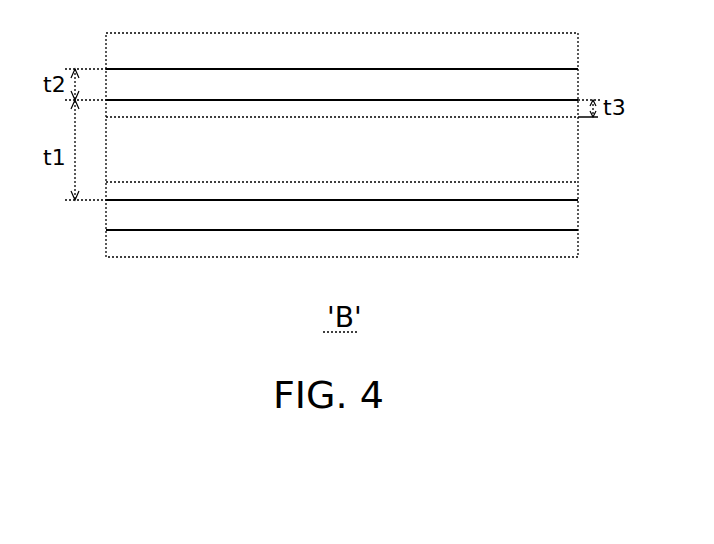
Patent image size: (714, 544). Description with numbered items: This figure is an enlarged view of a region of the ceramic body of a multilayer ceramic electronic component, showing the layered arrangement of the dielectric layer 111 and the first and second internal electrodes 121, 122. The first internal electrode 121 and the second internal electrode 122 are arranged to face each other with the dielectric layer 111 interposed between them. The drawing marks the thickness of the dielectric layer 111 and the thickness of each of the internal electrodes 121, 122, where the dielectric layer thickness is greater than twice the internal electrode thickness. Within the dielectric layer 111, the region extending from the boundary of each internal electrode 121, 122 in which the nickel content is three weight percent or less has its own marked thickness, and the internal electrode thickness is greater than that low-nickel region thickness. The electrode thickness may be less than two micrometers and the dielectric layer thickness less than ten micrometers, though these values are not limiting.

The first internal electrode 121 is at (567, 77).
The dielectric layer 111 is at (569, 150).
The second internal electrode 122 is at (569, 220).